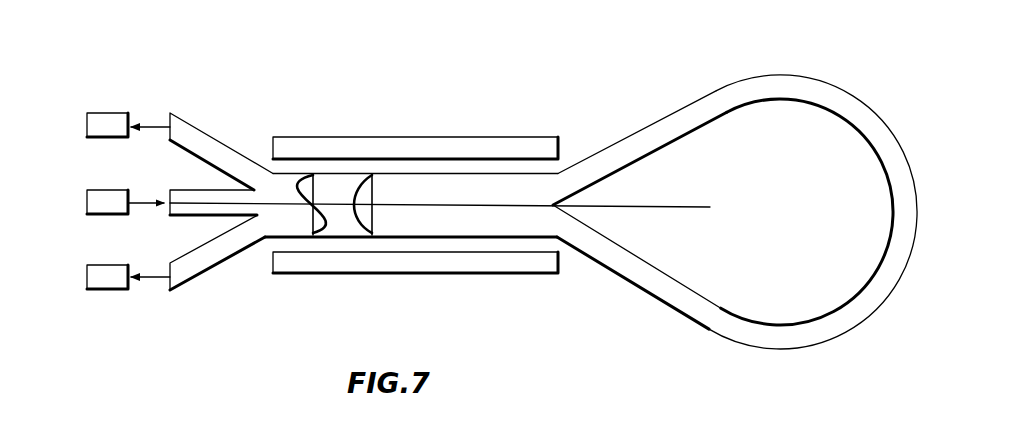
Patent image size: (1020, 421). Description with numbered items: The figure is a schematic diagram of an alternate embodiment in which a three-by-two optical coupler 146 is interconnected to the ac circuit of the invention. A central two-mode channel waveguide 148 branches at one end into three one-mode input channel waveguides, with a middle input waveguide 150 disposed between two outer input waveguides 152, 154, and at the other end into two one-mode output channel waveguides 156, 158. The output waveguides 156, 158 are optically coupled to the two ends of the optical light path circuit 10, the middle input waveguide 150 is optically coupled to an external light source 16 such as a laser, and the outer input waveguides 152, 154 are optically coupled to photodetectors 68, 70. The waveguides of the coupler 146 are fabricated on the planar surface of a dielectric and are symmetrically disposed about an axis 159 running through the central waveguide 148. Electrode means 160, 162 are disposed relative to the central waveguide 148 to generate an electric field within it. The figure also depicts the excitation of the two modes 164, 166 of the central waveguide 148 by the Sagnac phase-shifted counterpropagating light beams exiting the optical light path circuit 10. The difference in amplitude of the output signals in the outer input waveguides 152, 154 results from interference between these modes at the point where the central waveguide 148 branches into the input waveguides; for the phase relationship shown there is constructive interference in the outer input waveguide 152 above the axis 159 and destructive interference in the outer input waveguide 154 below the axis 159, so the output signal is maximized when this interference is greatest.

The optical light path circuit 10 is at (837, 88).
The external light source 16 is at (102, 190).
The photodetector 68 is at (103, 112).
The photodetector 70 is at (103, 290).
The (3×2) optical coupler 146 is at (474, 111).
The central two-mode channel waveguide 148 is at (557, 173).
The middle input waveguide 150 is at (182, 215).
The outer input waveguide 152 is at (215, 139).
The outer input waveguide 154 is at (208, 279).
The output channel waveguide 156 is at (665, 118).
The output channel waveguide 158 is at (652, 297).
The axis 159 is at (682, 208).
The electrode means 160 is at (338, 137).
The electrode means 162 is at (480, 275).
The mode of the central waveguide 164 is at (366, 230).
The mode of the central waveguide 166 is at (323, 230).